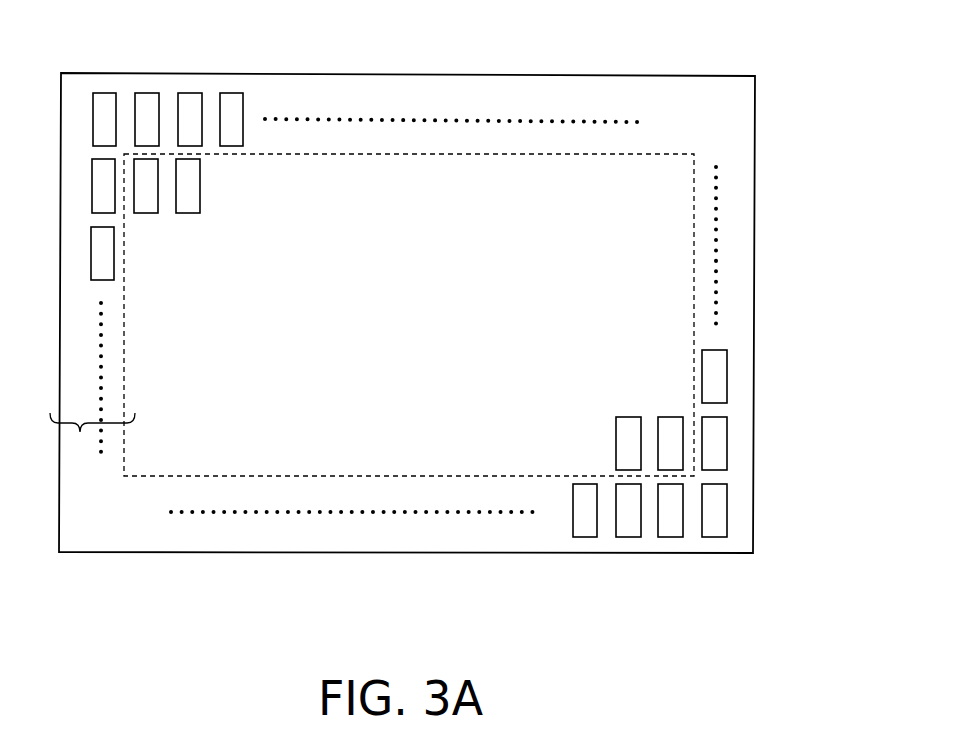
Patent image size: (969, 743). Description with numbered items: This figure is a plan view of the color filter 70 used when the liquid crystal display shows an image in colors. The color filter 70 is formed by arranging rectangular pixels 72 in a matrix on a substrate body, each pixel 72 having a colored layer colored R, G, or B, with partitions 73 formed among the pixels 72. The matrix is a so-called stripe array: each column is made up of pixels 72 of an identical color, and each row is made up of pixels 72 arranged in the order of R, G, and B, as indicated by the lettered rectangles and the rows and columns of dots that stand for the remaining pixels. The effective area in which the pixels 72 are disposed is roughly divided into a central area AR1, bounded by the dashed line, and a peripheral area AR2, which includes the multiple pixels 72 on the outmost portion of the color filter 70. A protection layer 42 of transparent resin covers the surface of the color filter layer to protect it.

The color filter 70 is at (772, 110).
The pixel 72 is at (233, 93).
The partition 73 is at (730, 322).
The protection layer 42 is at (361, 412).
The central area AR1 is at (160, 442).
The peripheral area AR2 is at (80, 432).